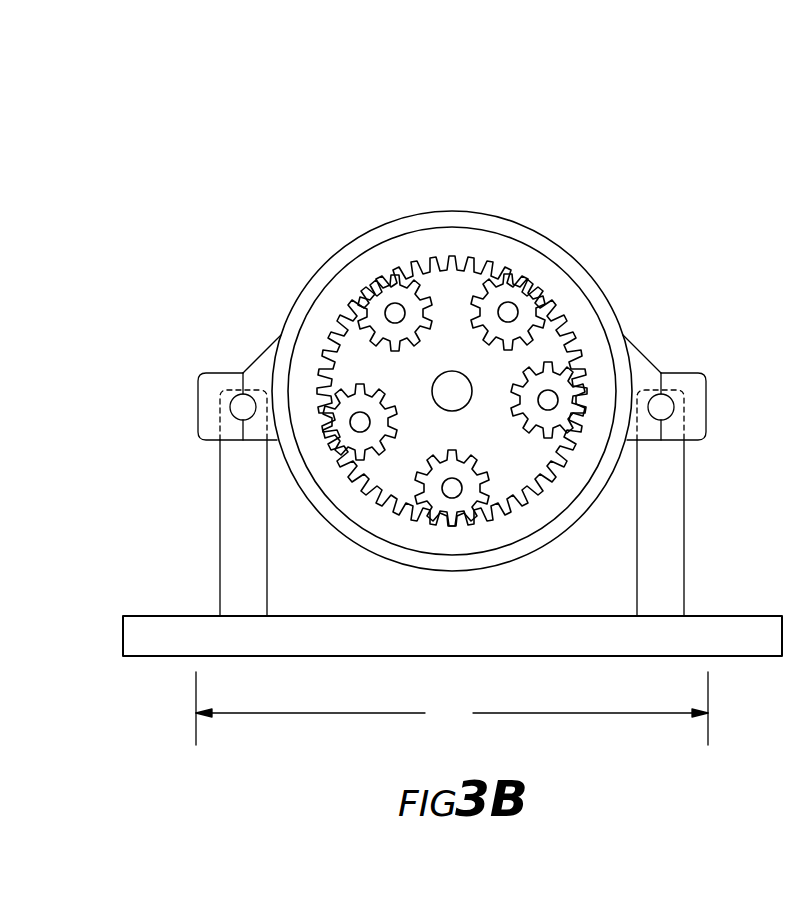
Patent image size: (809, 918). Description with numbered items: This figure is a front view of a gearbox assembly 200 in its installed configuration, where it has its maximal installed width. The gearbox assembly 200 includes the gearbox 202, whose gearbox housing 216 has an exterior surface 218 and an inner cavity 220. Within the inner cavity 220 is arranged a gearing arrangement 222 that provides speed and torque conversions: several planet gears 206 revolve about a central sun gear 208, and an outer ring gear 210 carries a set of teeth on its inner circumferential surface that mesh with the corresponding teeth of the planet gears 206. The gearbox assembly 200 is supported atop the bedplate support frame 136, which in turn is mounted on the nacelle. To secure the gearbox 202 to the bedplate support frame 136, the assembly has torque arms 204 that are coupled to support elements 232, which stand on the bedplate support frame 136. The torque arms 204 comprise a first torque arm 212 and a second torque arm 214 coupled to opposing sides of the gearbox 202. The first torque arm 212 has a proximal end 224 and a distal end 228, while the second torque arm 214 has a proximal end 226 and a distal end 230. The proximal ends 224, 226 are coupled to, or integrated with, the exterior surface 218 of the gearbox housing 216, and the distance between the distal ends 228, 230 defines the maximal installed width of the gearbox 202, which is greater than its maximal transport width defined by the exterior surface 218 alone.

The gearbox assembly 200 is at (645, 155).
The gearbox 202 is at (617, 245).
The torque arm 204 is at (472, 345).
The second torque arm 214 is at (225, 352).
The first torque arm 212 is at (682, 345).
The planet gears 206 is at (440, 502).
The sun gear 208 is at (433, 443).
The ring gear 210 is at (348, 277).
The gearbox housing 216 is at (497, 228).
The exterior surface 218 is at (393, 216).
The inner cavity 220 is at (383, 467).
The gearing arrangement 222 is at (568, 480).
The proximal end 224 is at (637, 356).
The proximal end 226 is at (262, 352).
The distal end 228 is at (713, 400).
The distal end 230 is at (192, 410).
The support element 232 is at (235, 515).
The bedplate support frame 136 is at (720, 615).